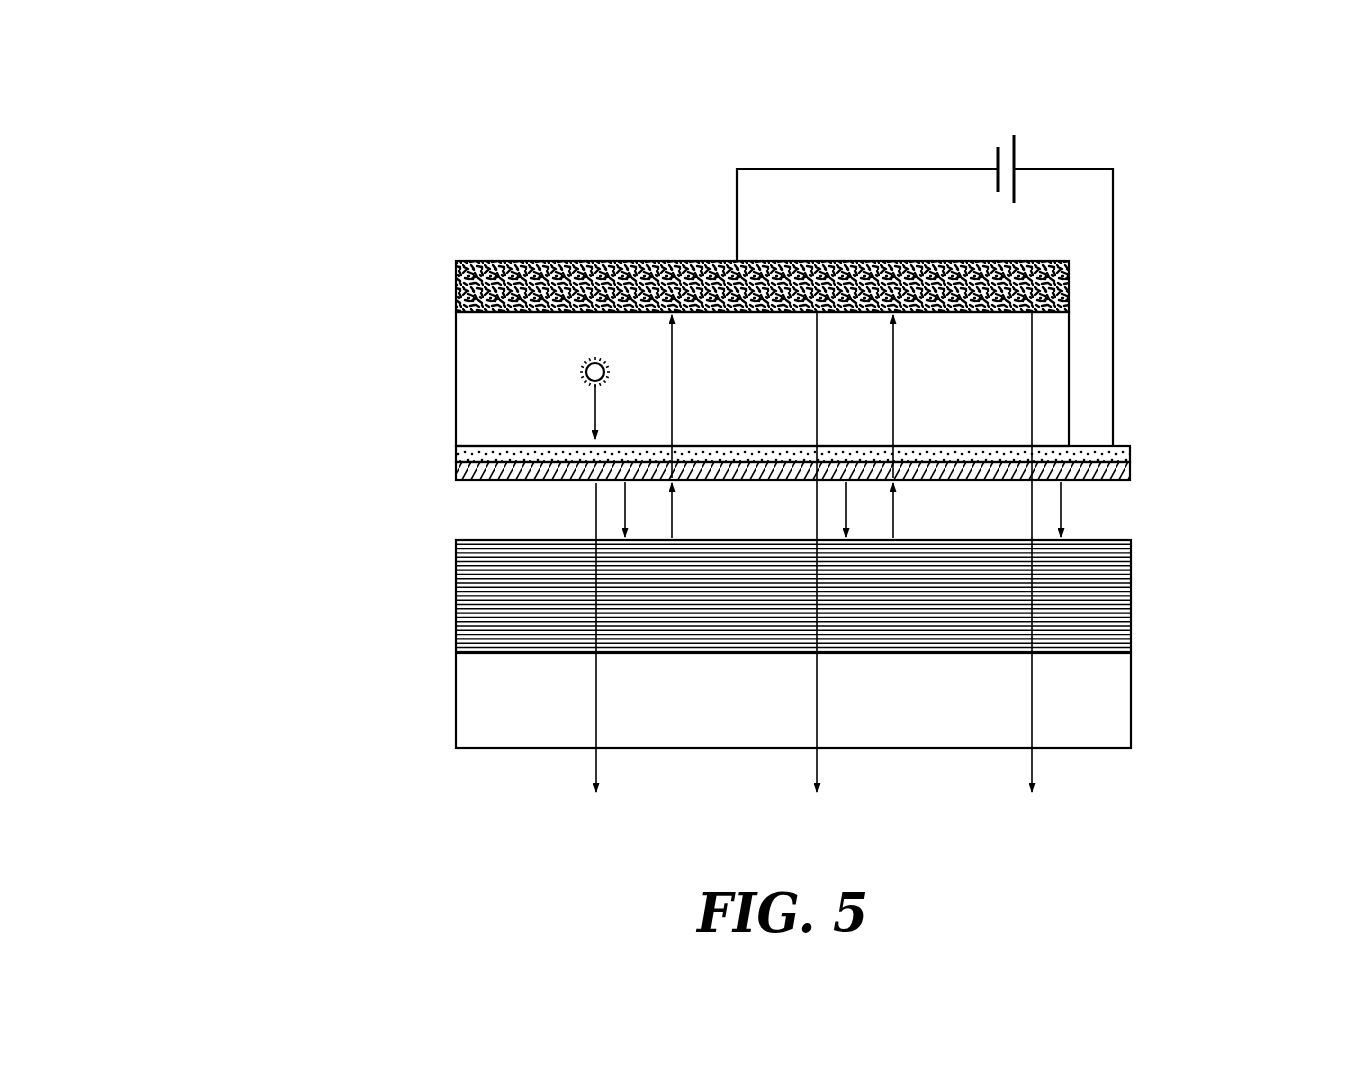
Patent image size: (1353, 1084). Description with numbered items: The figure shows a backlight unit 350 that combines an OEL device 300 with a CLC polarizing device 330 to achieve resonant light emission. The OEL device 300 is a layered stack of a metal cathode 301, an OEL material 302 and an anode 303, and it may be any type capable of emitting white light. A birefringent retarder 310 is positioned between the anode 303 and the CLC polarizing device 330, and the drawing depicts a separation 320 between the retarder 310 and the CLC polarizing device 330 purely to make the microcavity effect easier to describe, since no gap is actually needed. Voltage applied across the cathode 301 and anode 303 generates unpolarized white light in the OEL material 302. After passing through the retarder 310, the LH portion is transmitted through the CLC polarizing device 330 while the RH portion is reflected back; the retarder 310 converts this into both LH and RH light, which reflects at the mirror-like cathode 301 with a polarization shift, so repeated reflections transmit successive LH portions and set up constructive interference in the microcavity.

The OEL device 300 is at (1141, 346).
The cathode 301 is at (452, 287).
The OEL material 302 is at (452, 375).
The anode 303 is at (452, 453).
The birefringent retarder 310 is at (452, 470).
The separation 320 is at (1141, 510).
The CLC polarizing device 330 is at (452, 600).
The backlight unit 350 is at (1229, 138).